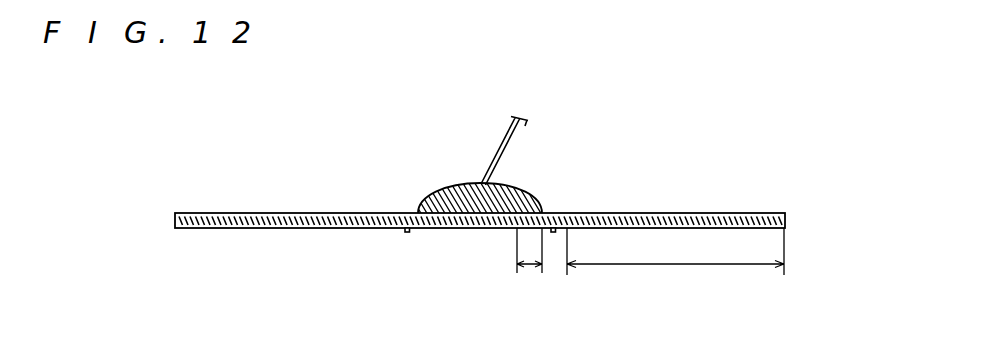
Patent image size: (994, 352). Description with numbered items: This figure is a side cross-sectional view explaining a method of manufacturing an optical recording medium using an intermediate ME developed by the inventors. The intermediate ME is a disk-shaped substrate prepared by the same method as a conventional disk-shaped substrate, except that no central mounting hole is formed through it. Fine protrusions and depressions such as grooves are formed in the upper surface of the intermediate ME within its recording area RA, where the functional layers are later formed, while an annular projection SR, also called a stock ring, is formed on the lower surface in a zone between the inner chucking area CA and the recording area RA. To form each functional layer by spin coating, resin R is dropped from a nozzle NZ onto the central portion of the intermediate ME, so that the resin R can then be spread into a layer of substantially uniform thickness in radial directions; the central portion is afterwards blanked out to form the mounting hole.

The intermediate ME is at (759, 213).
The resin R is at (541, 204).
The nozzle NZ is at (513, 135).
The annular projection SR is at (407, 233).
The chucking area CA is at (529, 266).
The recording area RA is at (675, 266).